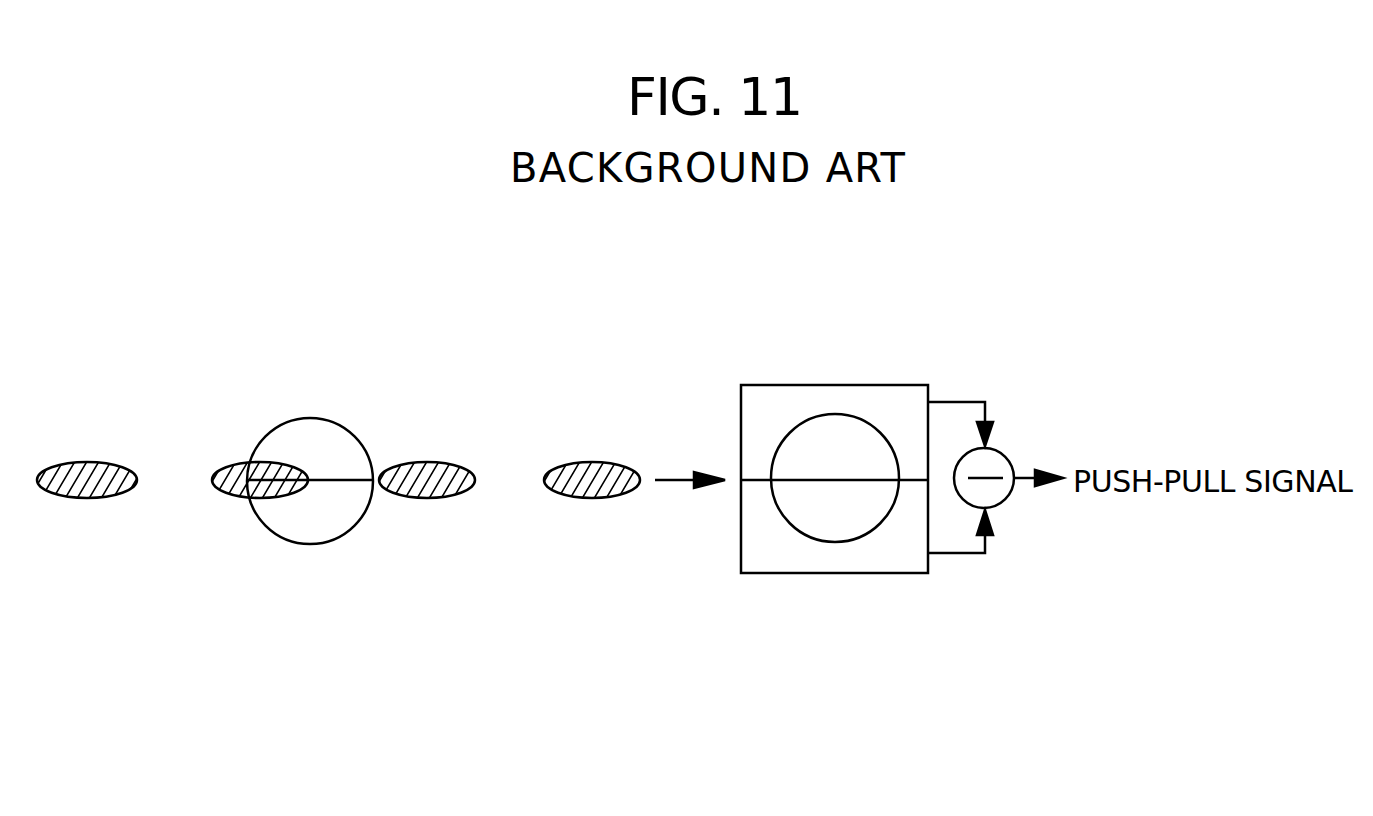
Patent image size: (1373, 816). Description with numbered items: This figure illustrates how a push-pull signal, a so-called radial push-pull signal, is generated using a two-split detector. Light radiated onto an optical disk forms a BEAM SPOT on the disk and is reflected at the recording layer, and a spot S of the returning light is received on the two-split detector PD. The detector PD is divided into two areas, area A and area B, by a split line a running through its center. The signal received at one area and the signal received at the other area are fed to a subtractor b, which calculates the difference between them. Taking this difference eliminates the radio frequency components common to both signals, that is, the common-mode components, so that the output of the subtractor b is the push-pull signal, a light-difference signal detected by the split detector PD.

The beam spot BEAM SPOT is at (317, 418).
The two-split detector PD is at (877, 385).
The split line a is at (745, 480).
The spot S is at (860, 538).
The subtractor b is at (1008, 497).